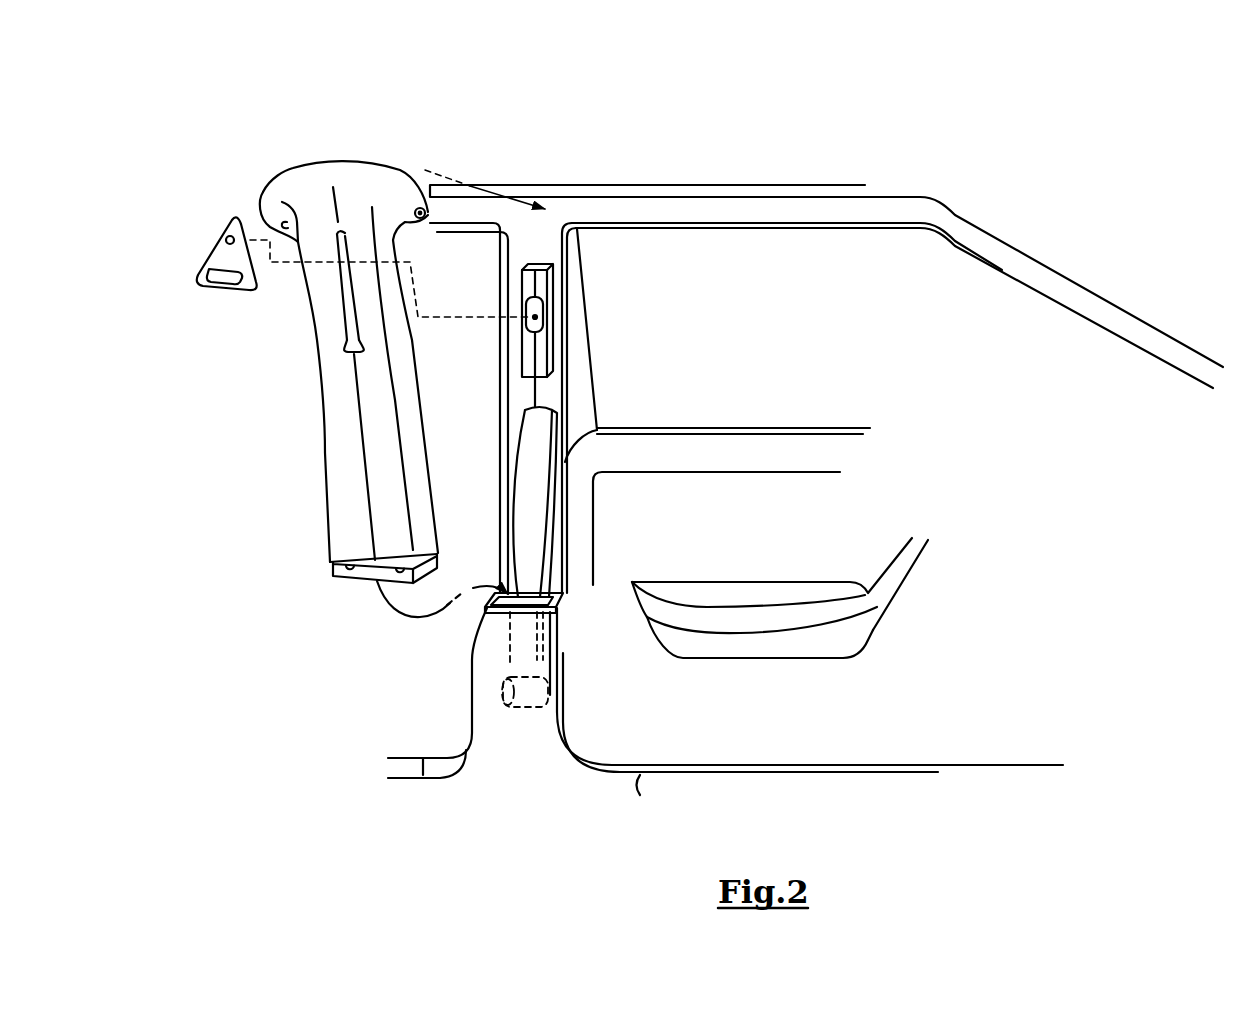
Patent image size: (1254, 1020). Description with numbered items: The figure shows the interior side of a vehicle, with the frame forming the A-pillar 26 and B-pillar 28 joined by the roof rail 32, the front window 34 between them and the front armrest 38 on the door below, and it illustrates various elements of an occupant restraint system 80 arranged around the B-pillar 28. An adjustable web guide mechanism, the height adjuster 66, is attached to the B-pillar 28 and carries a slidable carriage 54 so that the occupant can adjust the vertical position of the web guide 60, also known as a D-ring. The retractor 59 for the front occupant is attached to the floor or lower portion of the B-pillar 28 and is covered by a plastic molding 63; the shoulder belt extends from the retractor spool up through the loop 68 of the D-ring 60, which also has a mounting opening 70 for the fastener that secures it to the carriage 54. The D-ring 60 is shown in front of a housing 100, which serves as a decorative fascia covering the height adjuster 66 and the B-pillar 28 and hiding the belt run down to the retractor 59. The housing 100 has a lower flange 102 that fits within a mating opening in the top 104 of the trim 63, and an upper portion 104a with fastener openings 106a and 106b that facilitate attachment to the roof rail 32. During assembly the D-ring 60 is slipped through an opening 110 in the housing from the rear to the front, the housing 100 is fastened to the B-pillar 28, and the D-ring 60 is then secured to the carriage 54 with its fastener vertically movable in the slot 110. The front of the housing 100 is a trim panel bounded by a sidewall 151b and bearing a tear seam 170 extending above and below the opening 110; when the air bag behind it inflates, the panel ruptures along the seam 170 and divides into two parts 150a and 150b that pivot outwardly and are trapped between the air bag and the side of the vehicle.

The A-pillar 26 is at (1020, 257).
The B-pillar 28 is at (578, 320).
The roof rail 32 is at (693, 208).
The front window 34 is at (778, 277).
The front armrest 38 is at (813, 588).
The slidable carriage 54 is at (535, 328).
The seat belt retractor 59 is at (532, 707).
The web guide 60 is at (194, 254).
The plastic molding 63 is at (474, 691).
The height adjusting mechanism 66 is at (540, 283).
The loop 68 is at (213, 286).
The mounting opening 70 is at (227, 238).
The occupant restraint system 80 is at (378, 345).
The housing 100 is at (378, 345).
The lower flange 102 is at (357, 580).
The top of the trim 104 is at (557, 620).
The upper portion of the housing 104a is at (387, 160).
The fastener opening 106a is at (277, 217).
The fastener opening 106b is at (413, 208).
The opening 110 is at (353, 225).
The first trim panel part 150a is at (338, 450).
The second trim panel part 150b is at (382, 457).
The sidewall 151b is at (403, 377).
The tear seam 170 is at (318, 198).